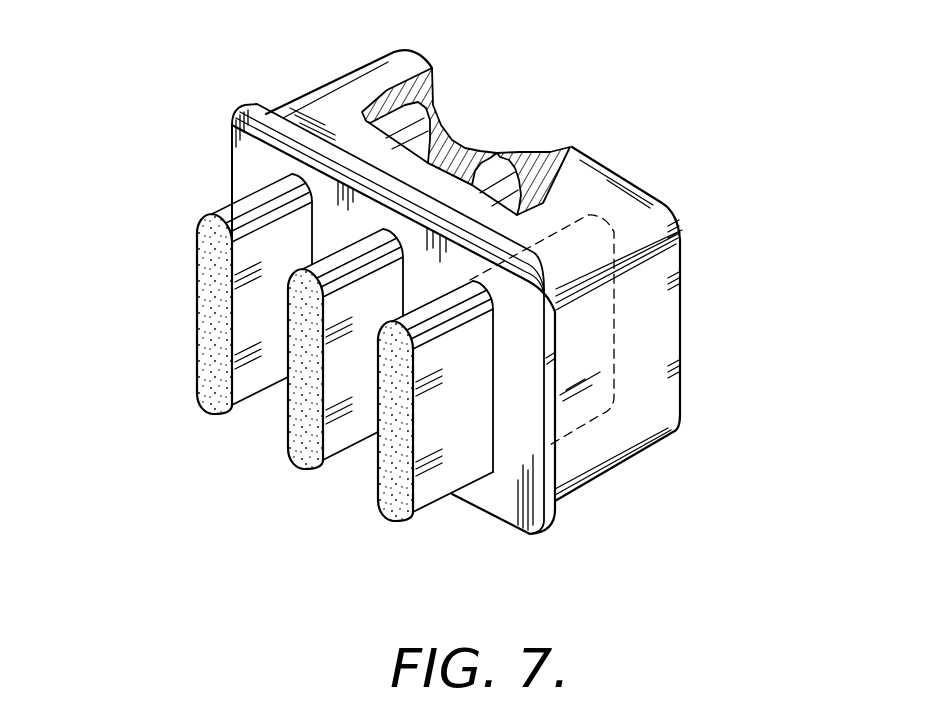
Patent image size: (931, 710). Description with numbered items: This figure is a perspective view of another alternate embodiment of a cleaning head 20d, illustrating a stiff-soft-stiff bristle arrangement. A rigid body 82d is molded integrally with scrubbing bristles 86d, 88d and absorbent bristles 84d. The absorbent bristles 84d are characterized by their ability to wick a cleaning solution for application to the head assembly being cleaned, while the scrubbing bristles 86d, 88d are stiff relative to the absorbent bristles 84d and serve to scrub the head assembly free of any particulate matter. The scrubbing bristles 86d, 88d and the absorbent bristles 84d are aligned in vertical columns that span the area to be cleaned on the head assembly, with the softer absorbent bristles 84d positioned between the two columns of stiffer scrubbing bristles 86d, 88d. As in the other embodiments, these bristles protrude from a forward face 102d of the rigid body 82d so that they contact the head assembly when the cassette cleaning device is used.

The cleaning head 20d is at (134, 516).
The rigid body 82d is at (698, 507).
The absorbent bristles 84d is at (307, 444).
The scrubbing bristles 86d is at (400, 497).
The scrubbing bristles 88d is at (212, 390).
The forward face 102d is at (514, 487).